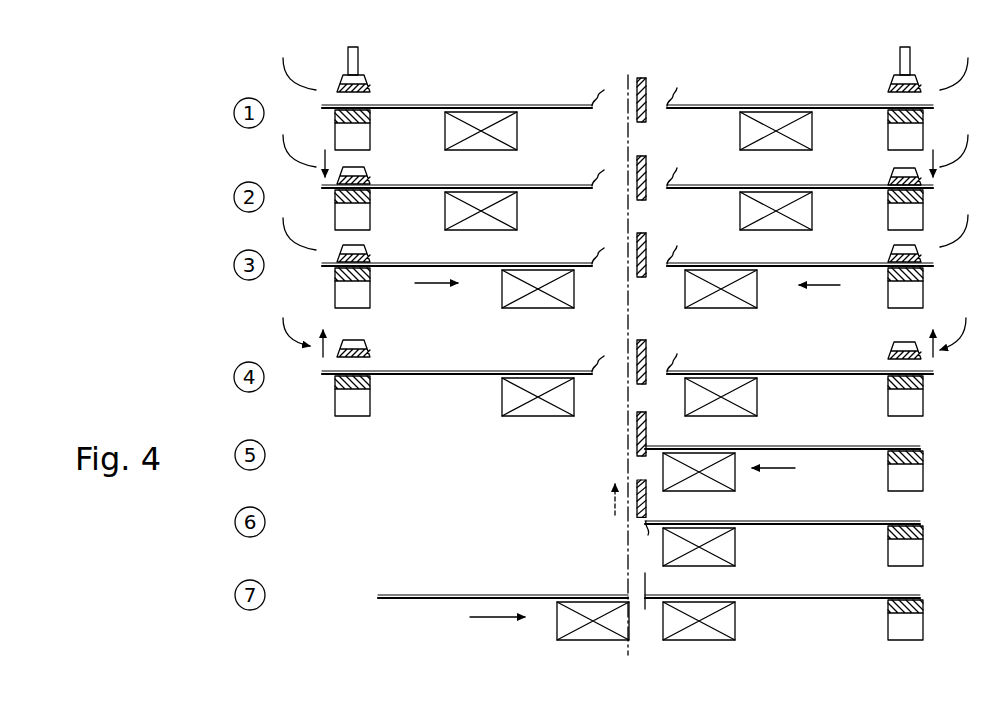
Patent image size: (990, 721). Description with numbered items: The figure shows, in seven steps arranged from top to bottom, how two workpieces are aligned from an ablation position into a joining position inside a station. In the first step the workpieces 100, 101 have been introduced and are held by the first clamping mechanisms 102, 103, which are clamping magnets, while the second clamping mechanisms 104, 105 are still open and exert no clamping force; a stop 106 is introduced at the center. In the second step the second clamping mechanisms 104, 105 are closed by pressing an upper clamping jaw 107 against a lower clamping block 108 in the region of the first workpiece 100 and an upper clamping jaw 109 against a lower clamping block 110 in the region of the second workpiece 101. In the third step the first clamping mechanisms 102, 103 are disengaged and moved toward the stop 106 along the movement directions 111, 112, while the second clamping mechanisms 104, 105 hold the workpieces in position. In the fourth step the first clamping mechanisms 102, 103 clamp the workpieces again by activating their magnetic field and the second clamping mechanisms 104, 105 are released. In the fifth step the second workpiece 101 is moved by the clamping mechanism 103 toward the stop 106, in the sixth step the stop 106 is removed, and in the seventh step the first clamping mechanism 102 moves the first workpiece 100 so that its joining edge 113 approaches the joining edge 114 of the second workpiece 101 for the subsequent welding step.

The first workpiece 100 is at (537, 586).
The second workpiece 101 is at (834, 586).
The first clamping mechanism 102 is at (541, 643).
The first clamping mechanism 103 is at (752, 636).
The second clamping mechanism 104 is at (293, 195).
The second clamping mechanism 105 is at (960, 195).
The stop 106 is at (665, 509).
The upper clamping jaw 107 is at (387, 348).
The lower clamping block 108 is at (387, 404).
The upper clamping jaw 109 is at (871, 350).
The lower clamping block 110 is at (939, 630).
The movement direction 111 is at (446, 288).
The movement direction 112 is at (838, 290).
The joining edge 113 is at (610, 226).
The joining edge 114 is at (661, 338).